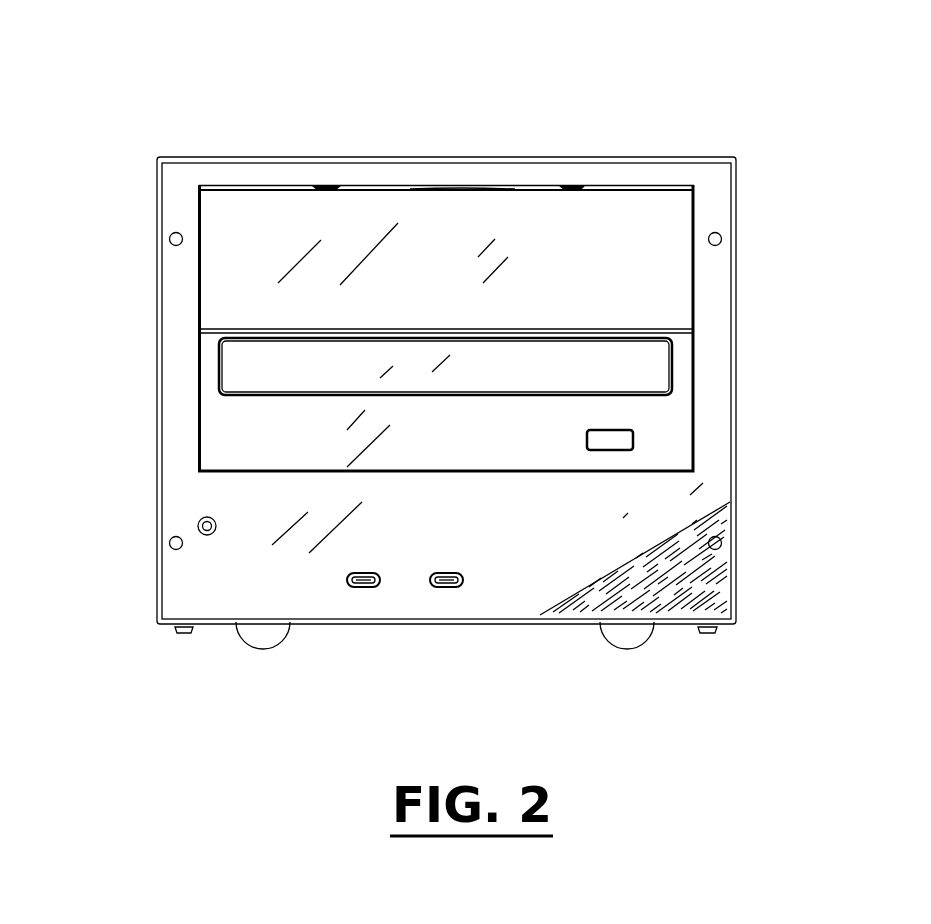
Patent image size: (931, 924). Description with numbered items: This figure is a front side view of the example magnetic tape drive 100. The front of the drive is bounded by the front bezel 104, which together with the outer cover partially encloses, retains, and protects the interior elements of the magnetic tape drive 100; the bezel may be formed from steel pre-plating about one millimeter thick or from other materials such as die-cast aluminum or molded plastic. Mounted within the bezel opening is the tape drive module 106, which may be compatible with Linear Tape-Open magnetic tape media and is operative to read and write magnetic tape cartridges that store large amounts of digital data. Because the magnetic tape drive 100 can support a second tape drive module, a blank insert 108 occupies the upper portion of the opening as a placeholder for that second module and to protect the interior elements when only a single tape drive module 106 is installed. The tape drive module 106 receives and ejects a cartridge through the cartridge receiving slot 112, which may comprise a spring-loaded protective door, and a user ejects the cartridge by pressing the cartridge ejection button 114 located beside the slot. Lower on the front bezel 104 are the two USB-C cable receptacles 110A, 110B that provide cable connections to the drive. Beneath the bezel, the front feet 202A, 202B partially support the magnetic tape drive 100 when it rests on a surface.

The magnetic tape drive 100 is at (368, 78).
The front bezel 104 is at (660, 512).
The tape drive module 106 is at (255, 430).
The blank insert 108 is at (653, 225).
The USB-C cable receptacle 110A is at (356, 588).
The USB-C cable receptacle 110B is at (456, 588).
The cartridge receiving slot 112 is at (637, 350).
The cartridge ejection button 114 is at (618, 438).
The front foot 202A is at (267, 649).
The front foot 202B is at (630, 649).